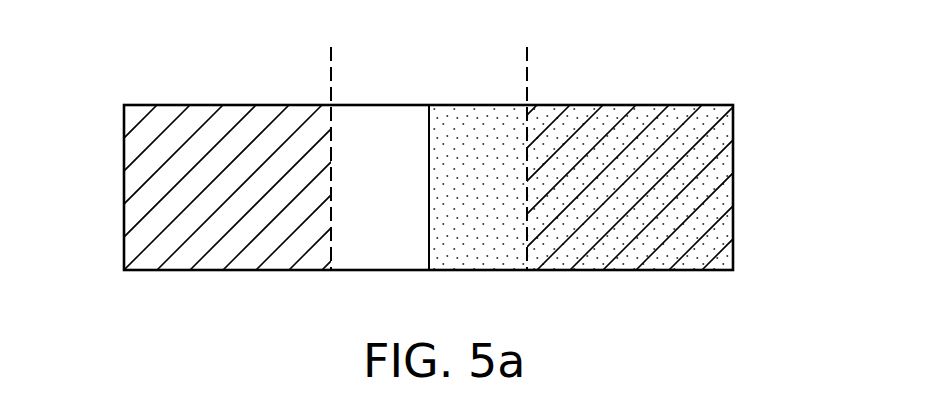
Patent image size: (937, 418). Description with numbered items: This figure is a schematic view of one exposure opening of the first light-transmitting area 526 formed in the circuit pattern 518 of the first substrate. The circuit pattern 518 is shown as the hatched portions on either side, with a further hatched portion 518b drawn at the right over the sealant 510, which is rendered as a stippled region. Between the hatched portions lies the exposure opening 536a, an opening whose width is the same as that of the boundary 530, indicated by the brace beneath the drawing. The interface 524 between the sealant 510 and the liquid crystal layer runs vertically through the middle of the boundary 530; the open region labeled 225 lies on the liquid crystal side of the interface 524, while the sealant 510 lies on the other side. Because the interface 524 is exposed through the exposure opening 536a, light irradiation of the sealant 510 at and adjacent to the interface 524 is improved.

The circuit pattern 518 is at (147, 187).
The second substrate portion 518b is at (713, 190).
The first light-transmitting area 526 is at (242, 156).
The exposure opening 536a is at (347, 172).
The opening / trench region 225 is at (407, 245).
The interface 524 is at (428, 132).
The sealant 510 is at (473, 128).
The boundary 530 is at (527, 284).